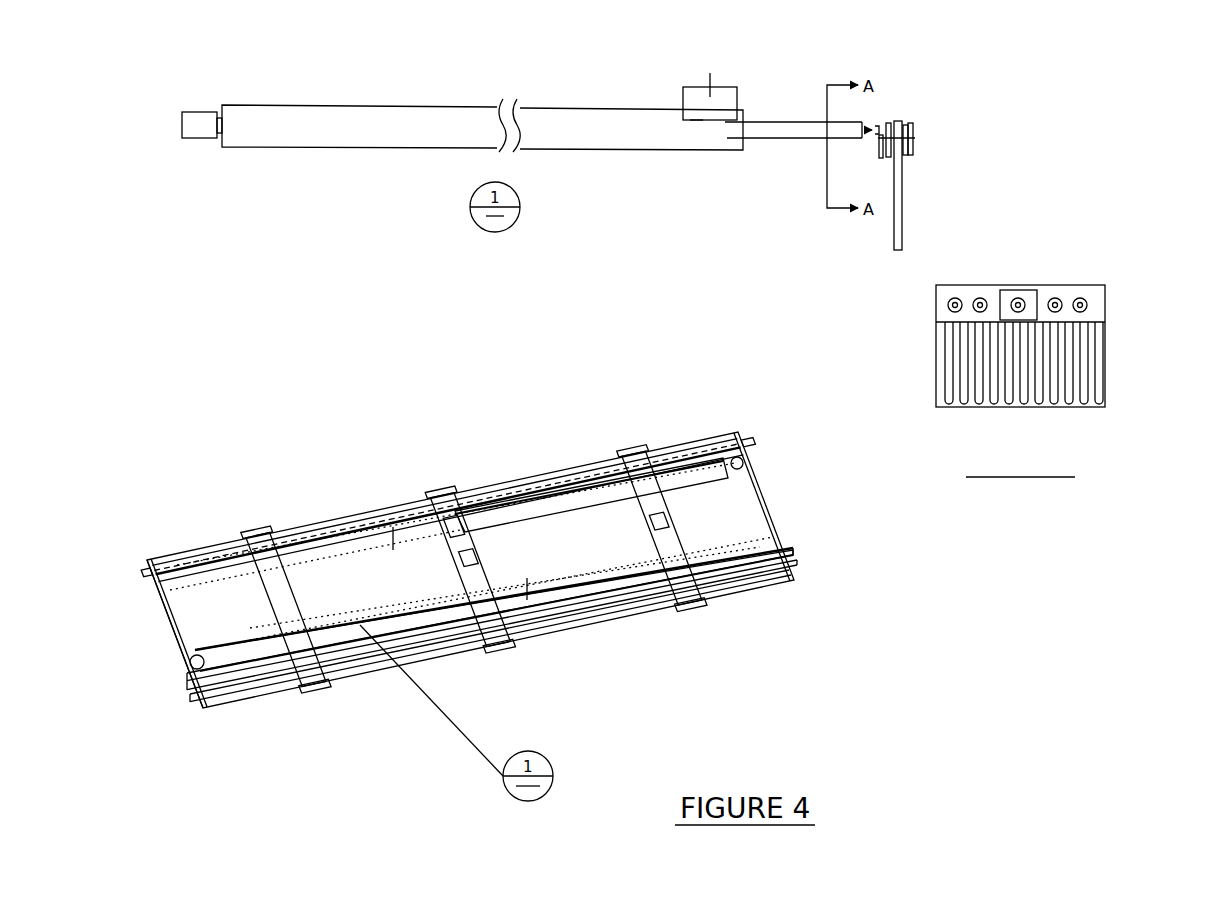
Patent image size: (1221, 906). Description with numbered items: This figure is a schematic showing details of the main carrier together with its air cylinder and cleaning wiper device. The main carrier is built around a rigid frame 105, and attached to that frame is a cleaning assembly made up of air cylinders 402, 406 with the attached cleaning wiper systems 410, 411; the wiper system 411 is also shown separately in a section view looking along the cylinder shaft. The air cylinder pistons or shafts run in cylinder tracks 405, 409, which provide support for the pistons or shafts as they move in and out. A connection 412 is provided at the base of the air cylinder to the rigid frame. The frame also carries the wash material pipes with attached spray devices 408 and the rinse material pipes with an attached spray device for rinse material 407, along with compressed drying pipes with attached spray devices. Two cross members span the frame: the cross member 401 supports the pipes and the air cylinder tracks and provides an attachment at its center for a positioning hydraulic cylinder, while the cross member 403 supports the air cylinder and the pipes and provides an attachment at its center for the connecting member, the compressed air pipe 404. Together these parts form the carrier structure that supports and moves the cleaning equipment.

The rigid frame of the main carrier 105 is at (512, 552).
The cross member 401 is at (665, 479).
The air cylinder 402 is at (591, 439).
The cross member 403 is at (481, 500).
The compressed air pipe 404 is at (321, 519).
The cylinder track 405 is at (208, 526).
The air cylinder 406 is at (504, 399).
The rinse material pipe with attached spray device 407 is at (494, 662).
The wash material pipe with attached spray device 408 is at (490, 647).
The cylinder track 409 is at (511, 631).
The cleaning wiper system 410 is at (952, 185).
The cleaning wiper system 411 is at (1071, 354).
The connection 412 is at (171, 80).